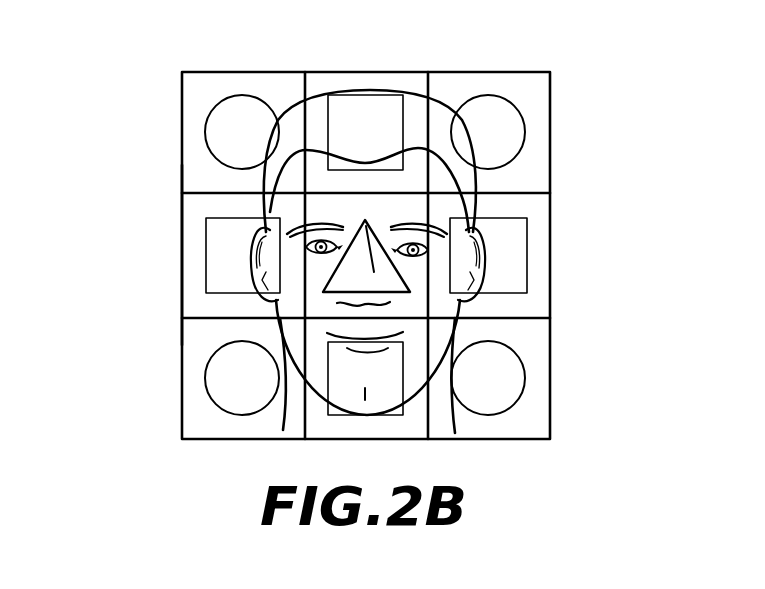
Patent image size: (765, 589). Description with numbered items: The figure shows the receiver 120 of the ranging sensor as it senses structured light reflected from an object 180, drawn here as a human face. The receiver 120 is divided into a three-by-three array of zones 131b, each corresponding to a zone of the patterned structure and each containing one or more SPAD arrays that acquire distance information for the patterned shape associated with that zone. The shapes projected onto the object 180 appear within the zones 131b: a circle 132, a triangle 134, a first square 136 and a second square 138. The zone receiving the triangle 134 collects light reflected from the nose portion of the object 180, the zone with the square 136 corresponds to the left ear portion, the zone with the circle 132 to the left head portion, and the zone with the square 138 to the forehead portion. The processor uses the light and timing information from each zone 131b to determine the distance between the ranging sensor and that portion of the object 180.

The receiver 120 is at (585, 58).
The zones 131b is at (182, 345).
The circle 132 is at (520, 132).
The triangle 134 is at (367, 220).
The first square 136 is at (517, 257).
The second square 138 is at (360, 108).
The object 180 is at (415, 98).